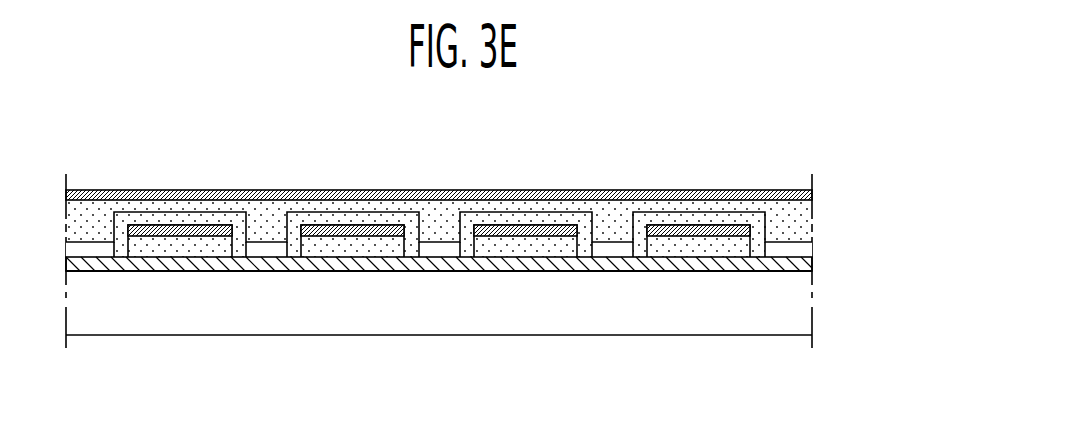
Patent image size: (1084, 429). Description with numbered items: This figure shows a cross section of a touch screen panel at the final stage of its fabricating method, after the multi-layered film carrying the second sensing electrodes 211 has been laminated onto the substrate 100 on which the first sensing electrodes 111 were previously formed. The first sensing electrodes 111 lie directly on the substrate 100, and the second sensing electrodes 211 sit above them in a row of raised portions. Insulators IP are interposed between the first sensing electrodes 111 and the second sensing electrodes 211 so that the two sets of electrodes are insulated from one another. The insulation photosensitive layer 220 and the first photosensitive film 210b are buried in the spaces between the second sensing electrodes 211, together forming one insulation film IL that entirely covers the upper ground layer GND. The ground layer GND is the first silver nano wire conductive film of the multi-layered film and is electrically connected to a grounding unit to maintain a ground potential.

The ground layer GND is at (386, 190).
The insulator IP is at (673, 247).
The second sensing electrode 211 is at (702, 231).
The first photosensitive film 210b is at (812, 222).
The insulation photosensitive layer 220 is at (812, 250).
The first sensing electrode 111 is at (812, 268).
The substrate 100 is at (808, 312).
The insulation film IL is at (895, 212).